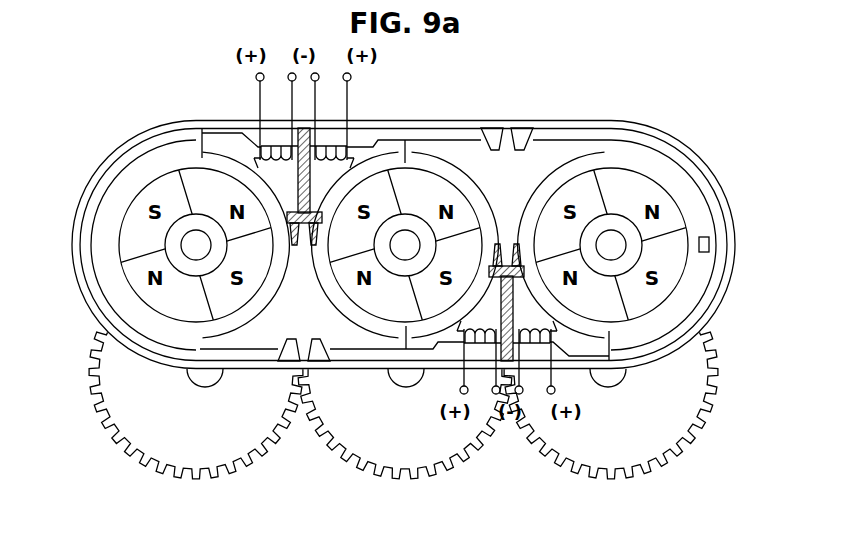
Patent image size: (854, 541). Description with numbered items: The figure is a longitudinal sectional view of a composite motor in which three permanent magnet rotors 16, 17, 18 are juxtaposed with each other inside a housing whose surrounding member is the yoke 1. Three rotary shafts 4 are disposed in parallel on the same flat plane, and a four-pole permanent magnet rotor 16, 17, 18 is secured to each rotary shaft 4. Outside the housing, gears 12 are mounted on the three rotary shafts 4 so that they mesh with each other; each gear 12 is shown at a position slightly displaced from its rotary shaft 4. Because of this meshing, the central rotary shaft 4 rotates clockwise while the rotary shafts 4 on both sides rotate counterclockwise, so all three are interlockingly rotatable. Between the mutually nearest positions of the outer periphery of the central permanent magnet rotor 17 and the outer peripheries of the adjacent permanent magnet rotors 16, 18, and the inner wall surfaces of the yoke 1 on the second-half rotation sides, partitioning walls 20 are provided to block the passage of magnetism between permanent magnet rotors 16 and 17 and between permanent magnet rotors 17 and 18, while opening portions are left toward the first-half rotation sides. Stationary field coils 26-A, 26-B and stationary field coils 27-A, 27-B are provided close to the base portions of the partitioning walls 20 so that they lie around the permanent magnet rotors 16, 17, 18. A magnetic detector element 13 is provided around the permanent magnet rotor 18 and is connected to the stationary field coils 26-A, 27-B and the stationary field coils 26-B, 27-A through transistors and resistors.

The yoke 1 is at (152, 127).
The rotary shaft 4 is at (613, 237).
The gear 12 is at (153, 427).
The magnetic detector element 13 is at (710, 244).
The permanent magnet rotor 16 is at (150, 295).
The permanent magnet rotor 17 is at (438, 177).
The permanent magnet rotor 18 is at (677, 265).
The partitioning wall 20 is at (514, 248).
The stationary field coil 26-A is at (258, 148).
The stationary field coil 26-B is at (347, 147).
The stationary field coil 27-A is at (462, 343).
The stationary field coil 27-B is at (560, 343).